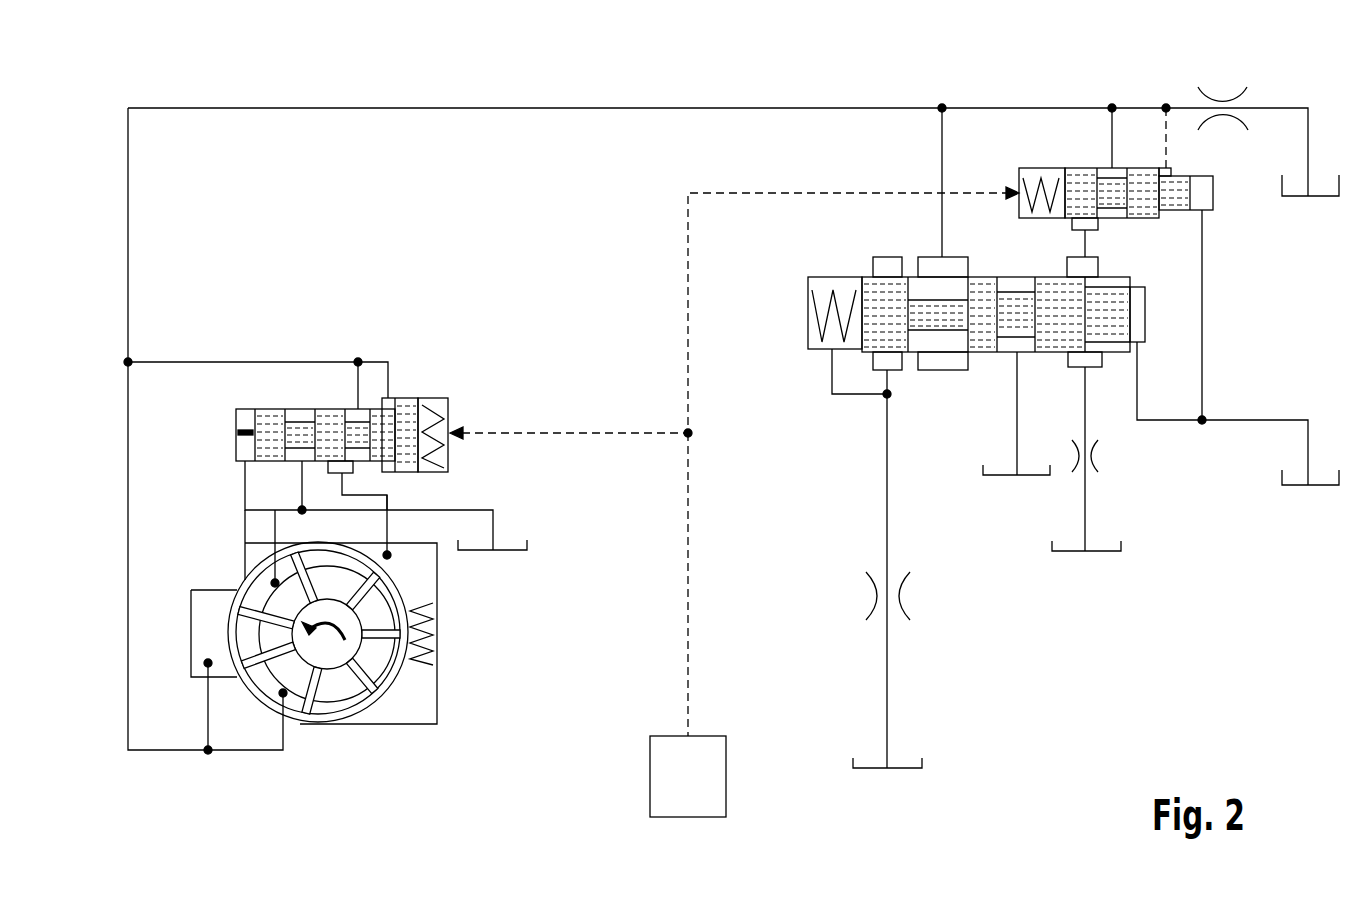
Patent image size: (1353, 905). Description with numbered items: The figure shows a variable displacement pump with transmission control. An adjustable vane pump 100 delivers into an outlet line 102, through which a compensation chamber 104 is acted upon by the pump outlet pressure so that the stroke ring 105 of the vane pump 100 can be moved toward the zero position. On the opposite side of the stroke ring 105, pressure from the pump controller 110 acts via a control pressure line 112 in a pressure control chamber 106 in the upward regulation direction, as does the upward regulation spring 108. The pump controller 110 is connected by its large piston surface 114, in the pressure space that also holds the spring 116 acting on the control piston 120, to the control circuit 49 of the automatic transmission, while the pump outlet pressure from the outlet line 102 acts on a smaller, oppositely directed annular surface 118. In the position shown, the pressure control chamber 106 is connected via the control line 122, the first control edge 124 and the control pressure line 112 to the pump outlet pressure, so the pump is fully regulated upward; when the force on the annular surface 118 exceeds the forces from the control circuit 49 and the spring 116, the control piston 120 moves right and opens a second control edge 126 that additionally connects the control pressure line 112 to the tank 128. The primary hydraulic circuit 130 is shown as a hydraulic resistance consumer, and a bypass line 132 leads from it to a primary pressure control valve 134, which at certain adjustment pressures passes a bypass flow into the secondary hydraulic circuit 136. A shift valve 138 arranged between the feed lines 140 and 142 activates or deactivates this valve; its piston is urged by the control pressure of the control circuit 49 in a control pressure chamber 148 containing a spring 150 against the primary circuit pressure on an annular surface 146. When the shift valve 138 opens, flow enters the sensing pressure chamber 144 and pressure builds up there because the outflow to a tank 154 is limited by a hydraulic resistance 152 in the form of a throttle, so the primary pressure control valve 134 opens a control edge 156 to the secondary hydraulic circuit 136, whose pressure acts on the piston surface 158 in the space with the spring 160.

The control circuit 49 is at (700, 777).
The adjustable vane pump 100 is at (285, 660).
The outlet line 102 is at (762, 103).
The compensation chamber 104 is at (208, 643).
The stroke ring 105 is at (238, 610).
The pressure control chamber 106 is at (418, 708).
The upward regulation spring 108 is at (437, 664).
The pump controller 110 is at (361, 382).
The control pressure line 112 is at (387, 532).
The large piston surface 114 is at (416, 410).
The spring 116 is at (448, 458).
The annular surface 118 is at (383, 465).
The control piston 120 is at (407, 407).
The control line 122 is at (234, 360).
The first control edge 124 is at (350, 409).
The second control edge 126 is at (300, 409).
The tank 128 is at (505, 553).
The primary hydraulic circuit 130 is at (1220, 100).
The bypass line 132 is at (942, 131).
The primary pressure control valve 134 is at (1038, 438).
The secondary hydraulic circuit 136 is at (906, 592).
The shift valve 138 is at (1167, 296).
The feed line 140 is at (1112, 131).
The feed line 142 is at (1085, 243).
The sensing pressure chamber 144 is at (1092, 350).
The annular surface 146 is at (1167, 214).
The control pressure chamber 148 is at (1045, 218).
The spring 150 is at (1045, 170).
The hydraulic resistance 152 is at (1100, 456).
The tank 154 is at (1100, 553).
The control edge 156 is at (920, 340).
The piston surface 158 is at (862, 340).
The spring 160 is at (833, 280).